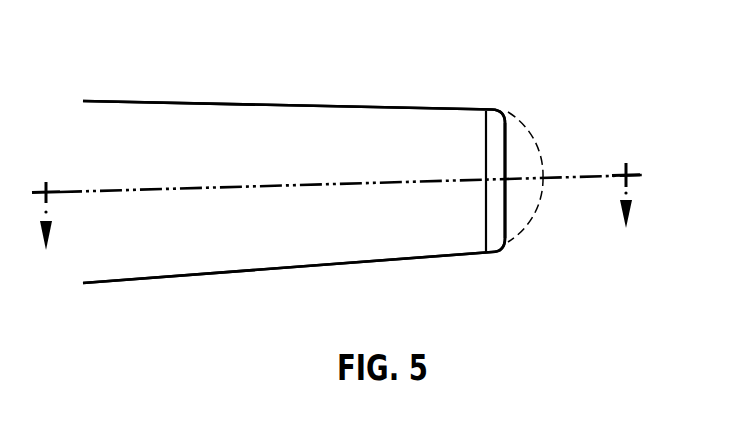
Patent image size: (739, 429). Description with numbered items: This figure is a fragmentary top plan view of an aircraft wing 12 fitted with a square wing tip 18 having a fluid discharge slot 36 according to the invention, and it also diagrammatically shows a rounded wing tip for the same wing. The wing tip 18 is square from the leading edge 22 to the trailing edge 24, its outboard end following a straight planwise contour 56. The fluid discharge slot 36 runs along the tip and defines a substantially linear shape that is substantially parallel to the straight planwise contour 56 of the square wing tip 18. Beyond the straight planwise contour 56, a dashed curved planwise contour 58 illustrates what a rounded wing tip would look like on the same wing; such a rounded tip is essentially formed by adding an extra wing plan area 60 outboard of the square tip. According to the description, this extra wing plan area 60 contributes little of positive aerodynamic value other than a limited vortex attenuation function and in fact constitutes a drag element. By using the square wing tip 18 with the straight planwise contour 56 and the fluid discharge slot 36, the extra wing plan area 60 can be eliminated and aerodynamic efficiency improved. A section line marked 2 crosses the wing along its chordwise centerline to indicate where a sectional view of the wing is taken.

The elongated body 12 is at (182, 101).
The leading edge 22 is at (317, 105).
The trailing edge 24 is at (372, 263).
The wing tip 18 is at (506, 140).
The fluid discharge slot 36 is at (486, 145).
The straight planwise contour 56 is at (520, 152).
The curved planwise contour 58 is at (542, 168).
The extra wing plan area 60 is at (518, 205).
The section line 2- 2 is at (338, 218).